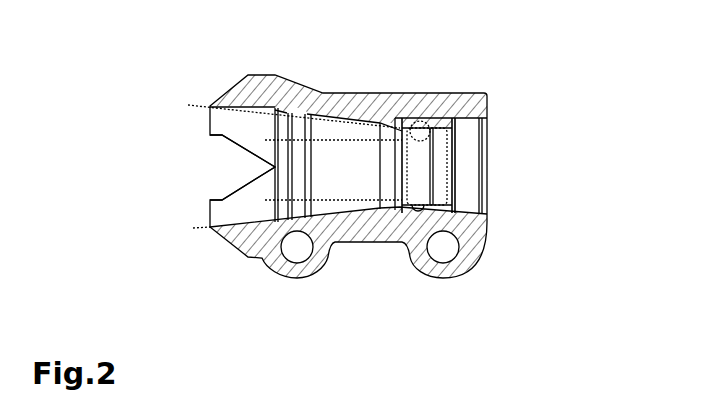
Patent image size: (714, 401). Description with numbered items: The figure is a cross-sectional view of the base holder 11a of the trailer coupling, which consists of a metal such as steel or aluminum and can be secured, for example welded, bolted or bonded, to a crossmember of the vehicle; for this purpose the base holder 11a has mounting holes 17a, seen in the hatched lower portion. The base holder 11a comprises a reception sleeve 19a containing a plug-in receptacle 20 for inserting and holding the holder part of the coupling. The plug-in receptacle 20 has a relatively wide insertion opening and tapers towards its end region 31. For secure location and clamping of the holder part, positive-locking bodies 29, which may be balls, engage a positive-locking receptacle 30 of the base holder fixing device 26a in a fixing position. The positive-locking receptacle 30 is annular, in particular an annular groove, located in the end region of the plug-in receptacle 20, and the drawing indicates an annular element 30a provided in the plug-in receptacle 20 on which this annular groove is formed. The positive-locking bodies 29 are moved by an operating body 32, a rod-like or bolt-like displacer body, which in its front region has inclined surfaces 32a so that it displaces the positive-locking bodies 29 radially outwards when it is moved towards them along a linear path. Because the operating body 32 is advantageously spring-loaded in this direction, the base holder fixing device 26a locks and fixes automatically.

The base holder 11a is at (361, 145).
The reception sleeve 19a is at (243, 82).
The plug-in receptacle 20 is at (228, 162).
The operating body 32 is at (355, 140).
The positive-locking bodies 29 is at (418, 120).
The base holder fixing device 26a is at (426, 119).
The inclined surfaces 32a is at (452, 140).
The positive-locking receptacle 30 is at (418, 207).
The end region 31 is at (447, 202).
The annular element 30a is at (457, 218).
The mounting holes 17a is at (440, 251).